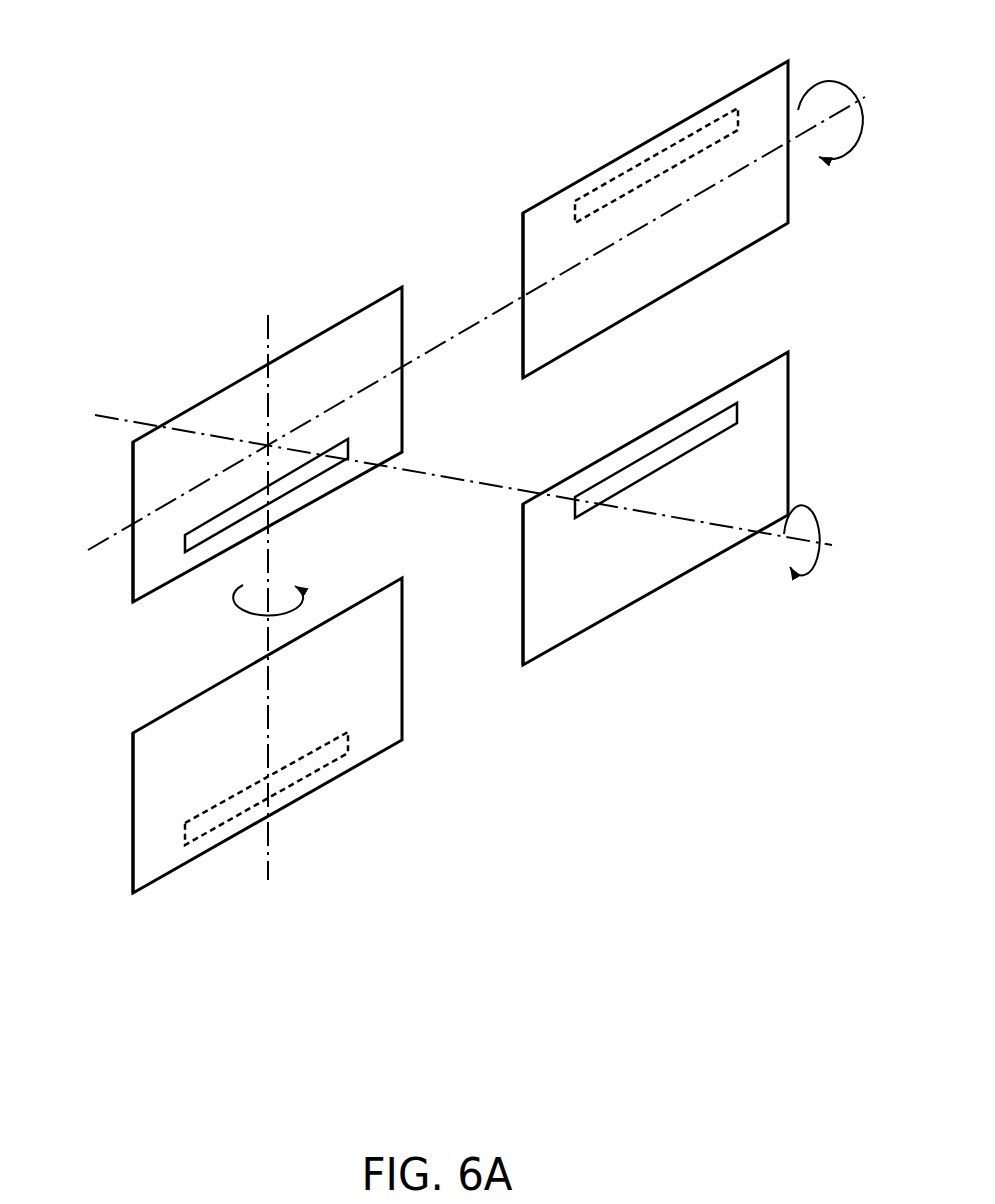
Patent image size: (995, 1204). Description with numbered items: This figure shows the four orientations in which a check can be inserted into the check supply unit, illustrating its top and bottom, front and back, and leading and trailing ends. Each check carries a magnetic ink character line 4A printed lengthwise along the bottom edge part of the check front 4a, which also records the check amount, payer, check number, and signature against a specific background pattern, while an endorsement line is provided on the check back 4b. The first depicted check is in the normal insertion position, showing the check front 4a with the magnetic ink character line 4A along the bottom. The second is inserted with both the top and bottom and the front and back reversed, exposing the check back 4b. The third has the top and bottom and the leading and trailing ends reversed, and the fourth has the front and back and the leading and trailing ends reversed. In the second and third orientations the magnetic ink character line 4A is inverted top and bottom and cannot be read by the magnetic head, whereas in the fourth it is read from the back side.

The magnetic ink character line 4A is at (297, 480).
The check front 4a is at (158, 543).
The check back 4b is at (155, 852).